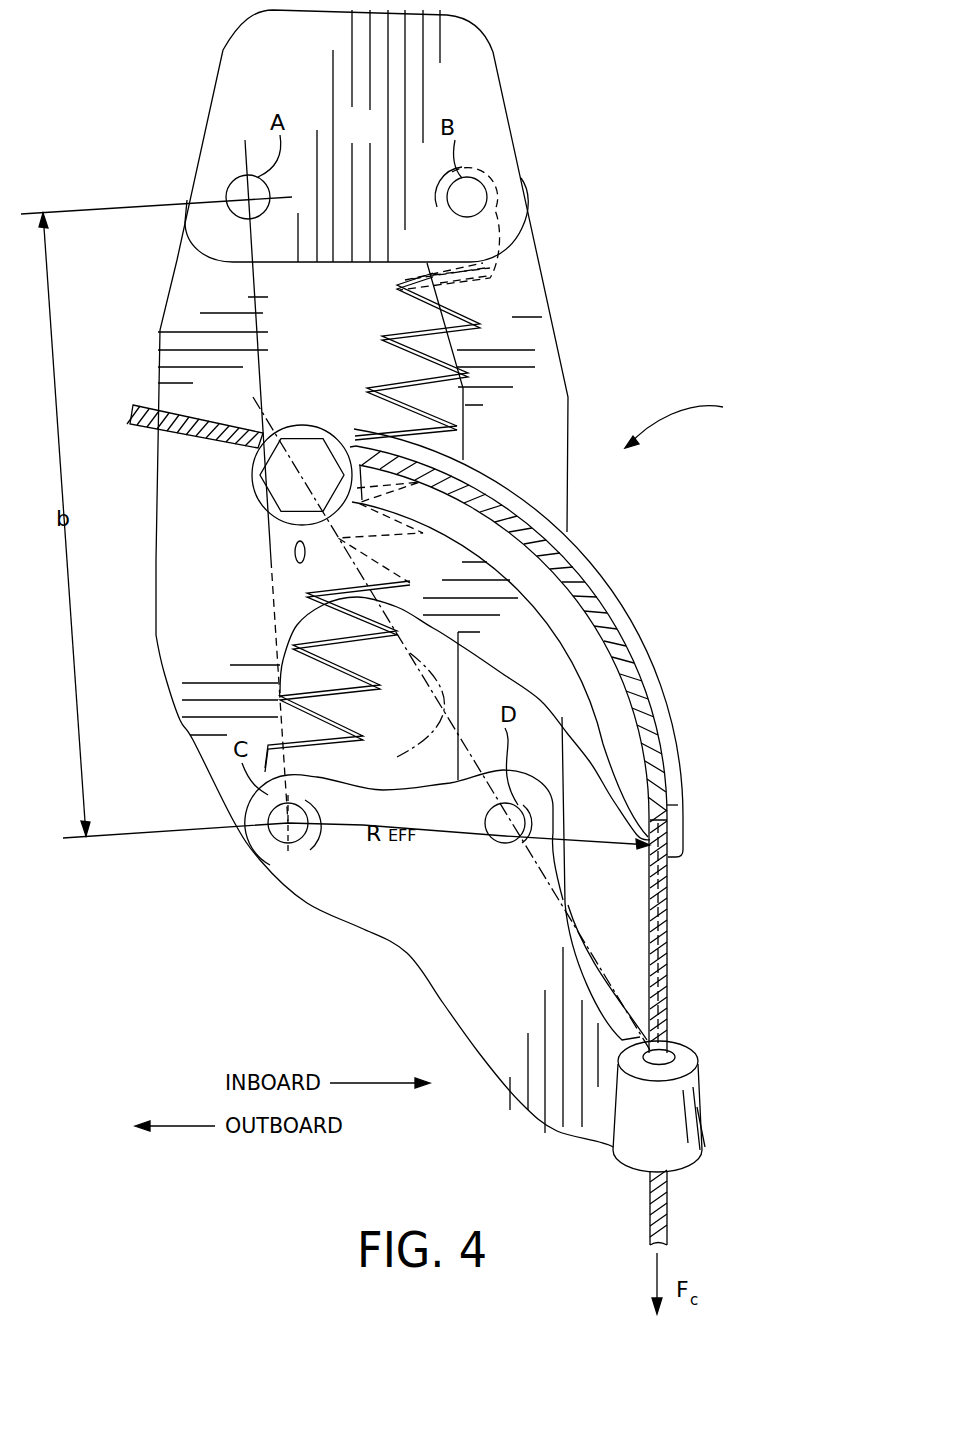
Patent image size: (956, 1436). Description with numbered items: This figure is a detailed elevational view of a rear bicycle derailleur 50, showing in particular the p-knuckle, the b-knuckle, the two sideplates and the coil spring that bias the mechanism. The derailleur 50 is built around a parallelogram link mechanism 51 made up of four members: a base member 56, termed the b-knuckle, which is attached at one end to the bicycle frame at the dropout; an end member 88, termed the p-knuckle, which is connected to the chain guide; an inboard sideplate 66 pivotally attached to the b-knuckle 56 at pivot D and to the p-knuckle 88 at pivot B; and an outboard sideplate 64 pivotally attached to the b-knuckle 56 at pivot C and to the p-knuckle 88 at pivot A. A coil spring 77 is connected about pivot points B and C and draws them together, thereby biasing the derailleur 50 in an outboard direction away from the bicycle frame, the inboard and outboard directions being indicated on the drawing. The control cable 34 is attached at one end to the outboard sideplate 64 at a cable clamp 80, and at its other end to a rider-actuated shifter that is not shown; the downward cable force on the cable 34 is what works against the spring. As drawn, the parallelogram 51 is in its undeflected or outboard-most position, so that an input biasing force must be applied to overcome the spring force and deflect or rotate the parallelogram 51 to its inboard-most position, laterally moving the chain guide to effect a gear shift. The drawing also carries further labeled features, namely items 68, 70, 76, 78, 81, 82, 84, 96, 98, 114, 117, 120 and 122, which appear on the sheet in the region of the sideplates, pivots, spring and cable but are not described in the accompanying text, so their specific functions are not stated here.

The control cable 34 is at (667, 923).
The bicycle derailleur 50 is at (687, 420).
The parallelogram link mechanism 51 is at (532, 99).
The base member 56 is at (398, 930).
The outboard sideplate 64 is at (205, 296).
The inboard sideplate 66 is at (552, 387).
The lower wall 68 is at (496, 1063).
The cable end fitting 70 is at (668, 1040).
The lower spring 76 is at (300, 562).
The coil spring 77 is at (403, 336).
The cam arm 78 is at (568, 636).
The cable clamp 80 is at (303, 433).
The hex nut 81 is at (314, 486).
The pivot bushing 82 is at (247, 848).
The link 84 is at (557, 862).
The end member 88 is at (369, 137).
The mounting hole 96 is at (237, 188).
The mounting hole 98 is at (477, 193).
The arc of travel 114 is at (451, 723).
The cable guide 117 is at (605, 588).
The cable guide end 120 is at (668, 805).
The cable guide root 122 is at (487, 472).